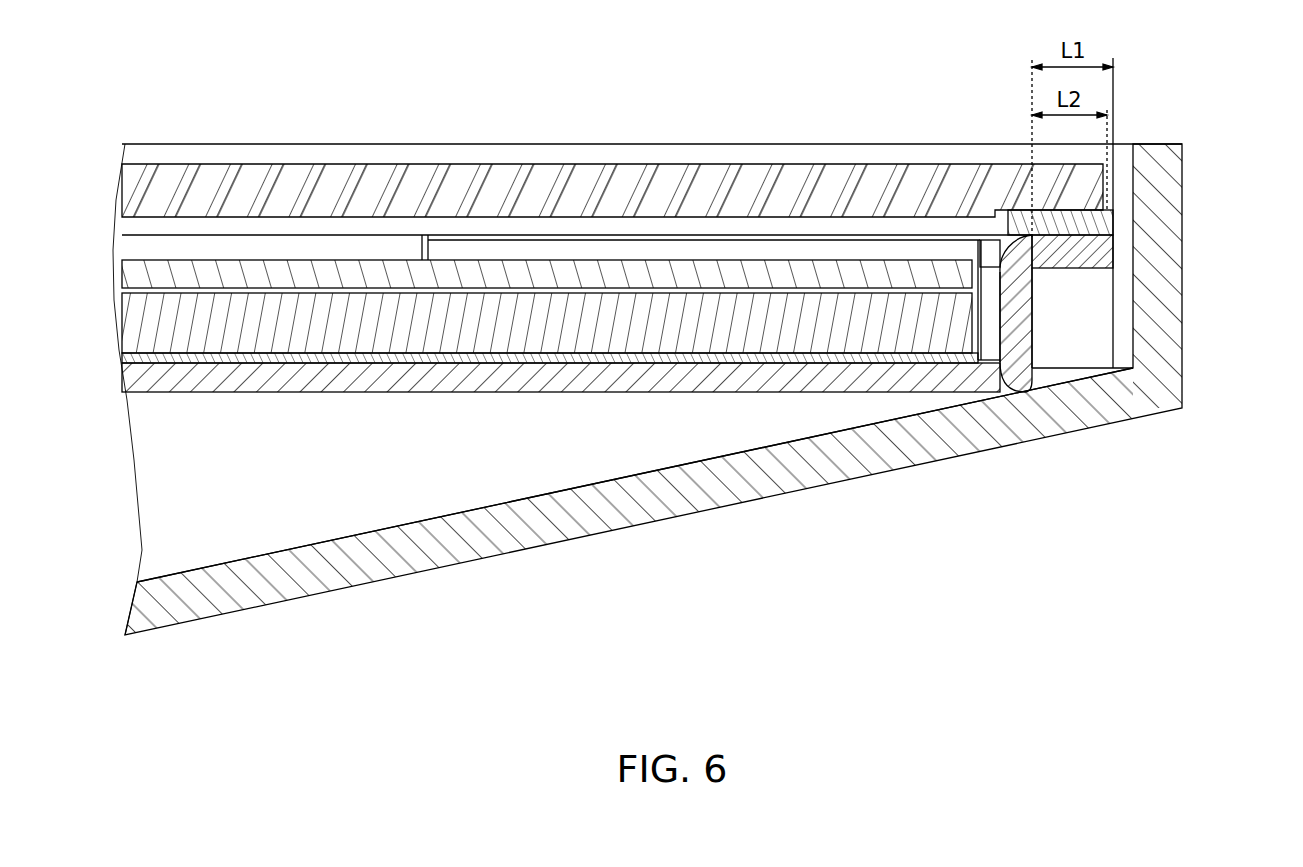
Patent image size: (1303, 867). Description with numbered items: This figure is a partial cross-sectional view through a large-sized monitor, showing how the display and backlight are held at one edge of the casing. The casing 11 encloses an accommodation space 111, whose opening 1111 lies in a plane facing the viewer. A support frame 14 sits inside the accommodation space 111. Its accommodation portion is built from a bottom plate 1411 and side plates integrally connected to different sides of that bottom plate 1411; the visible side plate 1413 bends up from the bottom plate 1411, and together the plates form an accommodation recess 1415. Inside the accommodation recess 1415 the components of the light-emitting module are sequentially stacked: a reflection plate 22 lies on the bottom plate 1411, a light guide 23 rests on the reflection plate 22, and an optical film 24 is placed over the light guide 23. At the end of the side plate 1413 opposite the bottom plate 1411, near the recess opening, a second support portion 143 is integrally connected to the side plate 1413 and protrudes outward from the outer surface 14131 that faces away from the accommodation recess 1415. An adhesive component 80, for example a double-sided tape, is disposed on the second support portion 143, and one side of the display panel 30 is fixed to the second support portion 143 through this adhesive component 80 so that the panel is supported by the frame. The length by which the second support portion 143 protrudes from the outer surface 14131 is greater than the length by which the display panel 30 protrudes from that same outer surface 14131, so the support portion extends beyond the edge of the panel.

The opening 1111 is at (822, 133).
The display panel 30 is at (750, 187).
The adhesive component 80 is at (1010, 225).
The casing 11 is at (1163, 231).
The accommodation space 111 is at (604, 452).
The second support portion 143 is at (1073, 255).
The support frame 14 is at (708, 408).
The bottom plate 1411 is at (698, 375).
The side plate 1413 is at (1013, 330).
The outer surface 14131 is at (1042, 303).
The accommodation recess 1415 is at (987, 328).
The reflection plate 22 is at (493, 357).
The light guide 23 is at (442, 327).
The optical film 24 is at (376, 273).